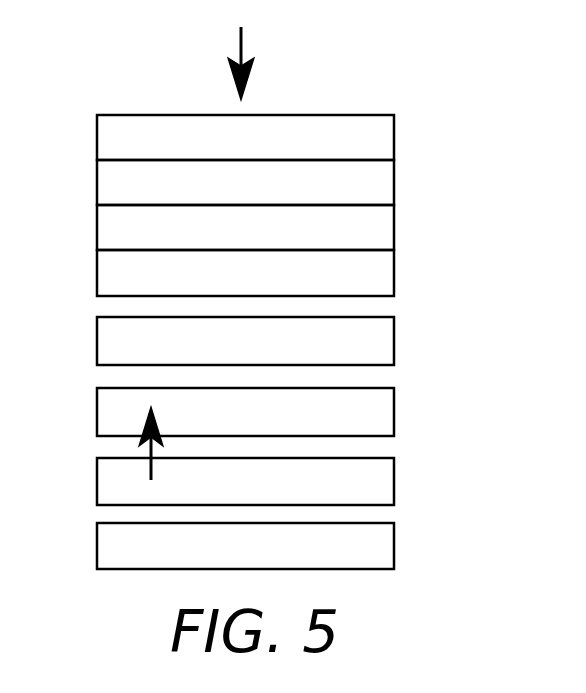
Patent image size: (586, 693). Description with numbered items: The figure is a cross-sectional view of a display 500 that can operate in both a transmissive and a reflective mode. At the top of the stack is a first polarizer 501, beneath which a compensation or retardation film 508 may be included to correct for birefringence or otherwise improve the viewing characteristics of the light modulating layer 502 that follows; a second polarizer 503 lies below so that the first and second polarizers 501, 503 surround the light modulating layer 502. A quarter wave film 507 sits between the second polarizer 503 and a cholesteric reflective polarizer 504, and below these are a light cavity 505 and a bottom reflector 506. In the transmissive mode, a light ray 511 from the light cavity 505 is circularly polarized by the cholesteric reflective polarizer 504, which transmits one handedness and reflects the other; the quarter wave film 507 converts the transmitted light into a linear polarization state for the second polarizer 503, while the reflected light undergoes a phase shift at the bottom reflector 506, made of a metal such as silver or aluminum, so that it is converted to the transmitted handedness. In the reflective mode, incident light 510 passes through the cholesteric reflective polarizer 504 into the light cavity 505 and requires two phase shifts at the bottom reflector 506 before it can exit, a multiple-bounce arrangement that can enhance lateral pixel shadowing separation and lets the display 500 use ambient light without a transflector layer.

The display 500 is at (138, 73).
The first polarizer 501 is at (395, 142).
The compensation or retardation film 508 is at (395, 184).
The light modulating layer 502 is at (395, 227).
The second polarizer 503 is at (395, 272).
The quarter wave film 507 is at (395, 343).
The cholesteric reflective polarizer 504 is at (395, 415).
The light cavity 505 is at (395, 483).
The bottom reflector 506 is at (395, 543).
The incident light 510 is at (242, 40).
The light ray 511 is at (147, 448).